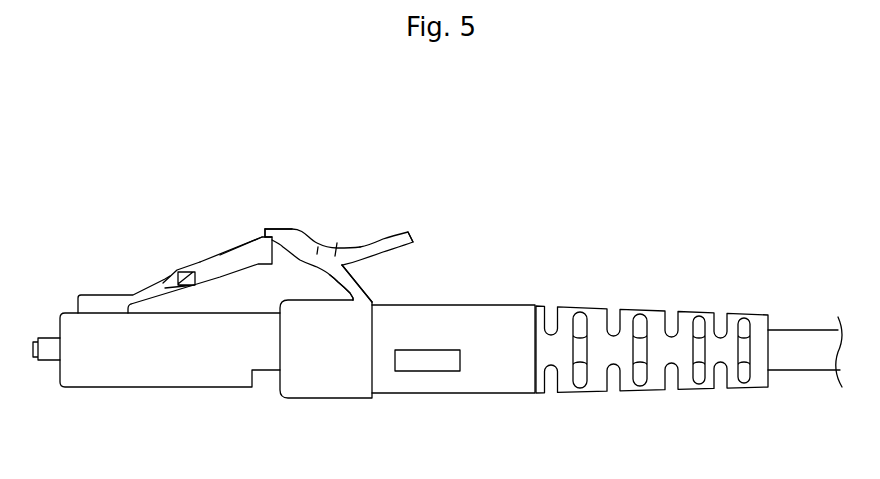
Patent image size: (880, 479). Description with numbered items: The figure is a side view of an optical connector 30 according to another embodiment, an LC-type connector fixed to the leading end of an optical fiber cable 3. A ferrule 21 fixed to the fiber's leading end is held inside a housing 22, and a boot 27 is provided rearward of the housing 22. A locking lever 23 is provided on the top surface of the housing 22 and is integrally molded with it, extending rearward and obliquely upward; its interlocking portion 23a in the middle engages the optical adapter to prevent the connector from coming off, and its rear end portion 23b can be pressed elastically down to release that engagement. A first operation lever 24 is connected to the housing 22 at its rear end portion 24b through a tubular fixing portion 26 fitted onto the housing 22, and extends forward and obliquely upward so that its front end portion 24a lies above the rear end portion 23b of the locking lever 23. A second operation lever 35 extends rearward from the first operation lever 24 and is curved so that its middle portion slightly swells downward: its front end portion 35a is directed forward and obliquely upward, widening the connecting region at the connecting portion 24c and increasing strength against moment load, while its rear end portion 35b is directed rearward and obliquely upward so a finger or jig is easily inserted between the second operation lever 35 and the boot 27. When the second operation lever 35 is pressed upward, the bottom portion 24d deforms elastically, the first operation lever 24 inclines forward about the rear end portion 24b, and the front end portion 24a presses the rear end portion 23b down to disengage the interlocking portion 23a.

The optical fiber cable 3 is at (802, 337).
The ferrule 21 is at (48, 346).
The housing 22 is at (175, 372).
The locking lever 23 is at (201, 239).
The interlocking portion 23a is at (203, 260).
The rear end portion 23b is at (250, 250).
The first operation lever 24 is at (347, 227).
The front end portion 24a is at (272, 228).
The rear end portion 24b is at (363, 298).
The connecting portion 24c is at (318, 247).
The bottom portion 24d is at (339, 282).
The fixing portion 26 is at (338, 382).
The boot 27 is at (497, 380).
The optical connector 30 is at (417, 208).
The second operation lever 35 is at (410, 212).
The front end portion 35a is at (337, 243).
The rear end portion 35b is at (415, 238).